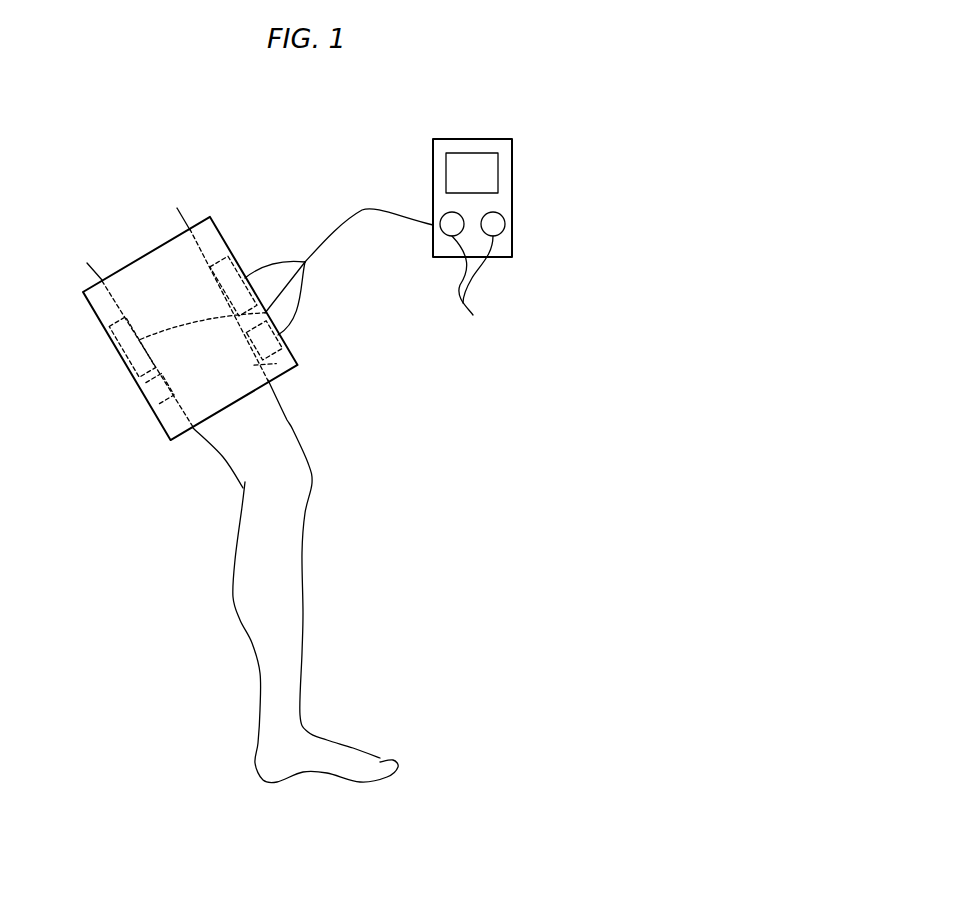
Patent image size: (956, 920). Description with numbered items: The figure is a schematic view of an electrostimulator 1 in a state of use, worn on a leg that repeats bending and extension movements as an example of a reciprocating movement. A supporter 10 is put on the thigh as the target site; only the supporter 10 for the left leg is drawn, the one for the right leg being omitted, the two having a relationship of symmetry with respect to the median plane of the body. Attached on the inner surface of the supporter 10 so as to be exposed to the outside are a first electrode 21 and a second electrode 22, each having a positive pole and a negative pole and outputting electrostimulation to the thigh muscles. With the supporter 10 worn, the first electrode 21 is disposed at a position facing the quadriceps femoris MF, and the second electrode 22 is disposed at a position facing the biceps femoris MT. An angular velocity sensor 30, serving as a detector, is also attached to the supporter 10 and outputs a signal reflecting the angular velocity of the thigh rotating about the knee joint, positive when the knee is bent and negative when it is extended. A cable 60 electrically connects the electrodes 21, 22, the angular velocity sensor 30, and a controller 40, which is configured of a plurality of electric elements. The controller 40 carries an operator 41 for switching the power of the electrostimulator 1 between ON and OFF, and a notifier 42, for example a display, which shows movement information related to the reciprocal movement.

The electrostimulator 1 is at (426, 415).
The supporter 10 is at (210, 218).
The first electrode 21 is at (242, 258).
The second electrode 22 is at (110, 348).
The angular velocity sensor 30 is at (282, 337).
The controller 40 is at (512, 139).
The operator 41 is at (472, 283).
The notifier 42 is at (498, 168).
The cable 60 is at (368, 208).
The biceps femoris MT is at (147, 407).
The quadriceps femoris MF is at (295, 365).